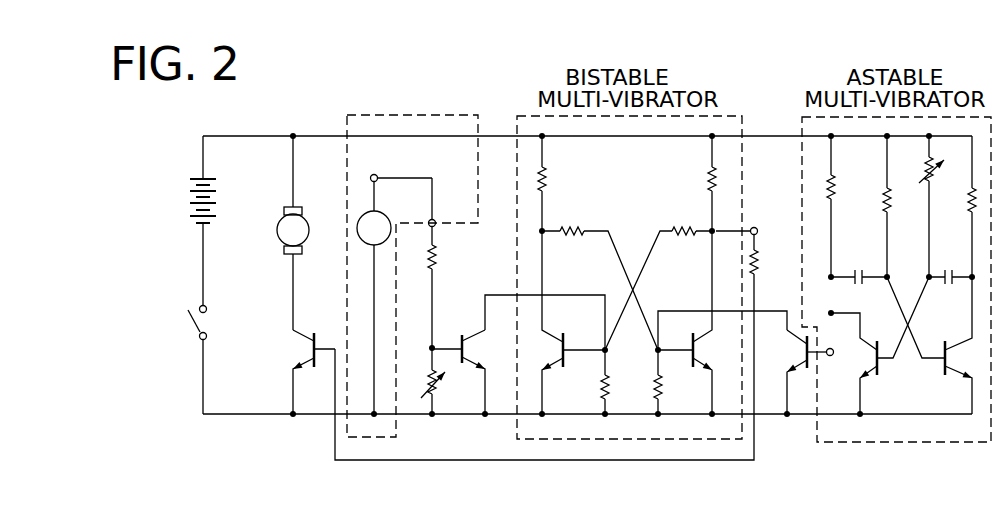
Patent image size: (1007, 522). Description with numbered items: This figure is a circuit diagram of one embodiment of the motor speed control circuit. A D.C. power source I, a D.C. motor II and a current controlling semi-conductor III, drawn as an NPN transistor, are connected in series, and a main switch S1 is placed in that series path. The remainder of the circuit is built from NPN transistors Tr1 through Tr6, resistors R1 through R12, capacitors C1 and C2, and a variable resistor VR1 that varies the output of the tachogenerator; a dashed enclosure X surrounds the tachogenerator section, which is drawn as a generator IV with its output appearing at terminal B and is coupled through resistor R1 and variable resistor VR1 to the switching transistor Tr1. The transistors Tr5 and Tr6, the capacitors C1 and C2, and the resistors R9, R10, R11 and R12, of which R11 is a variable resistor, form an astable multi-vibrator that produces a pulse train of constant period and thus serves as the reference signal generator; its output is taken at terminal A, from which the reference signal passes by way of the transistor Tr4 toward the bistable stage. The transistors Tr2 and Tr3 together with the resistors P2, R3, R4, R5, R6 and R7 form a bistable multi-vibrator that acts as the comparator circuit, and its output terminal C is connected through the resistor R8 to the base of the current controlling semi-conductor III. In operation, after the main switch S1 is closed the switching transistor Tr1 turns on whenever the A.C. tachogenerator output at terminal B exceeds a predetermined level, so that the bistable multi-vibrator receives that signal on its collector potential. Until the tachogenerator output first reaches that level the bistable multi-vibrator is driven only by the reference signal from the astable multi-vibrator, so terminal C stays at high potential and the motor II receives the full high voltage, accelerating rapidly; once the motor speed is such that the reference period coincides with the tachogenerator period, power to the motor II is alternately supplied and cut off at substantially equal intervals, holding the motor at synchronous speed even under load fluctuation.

The D.C. power source I is at (196, 193).
The D.C. motor II is at (281, 220).
The current controlling semi-conductor III is at (303, 346).
The generator IV is at (388, 213).
The main switch S1 is at (182, 323).
The control unit X is at (412, 120).
The terminal B is at (373, 174).
The output terminal C is at (455, 208).
The terminal A is at (621, 359).
The resistor R1 is at (449, 287).
The variable resistor VR1 is at (417, 381).
The switching transistor Tr1 is at (470, 348).
The resistor P2 is at (559, 183).
The resistor R3 is at (694, 183).
The resistor R4 is at (600, 288).
The resistor R5 is at (658, 288).
The transistor Tr2 is at (573, 322).
The transistor Tr3 is at (708, 355).
The resistor R6 is at (621, 382).
The resistor R7 is at (675, 382).
The resistor R8 is at (771, 266).
The transistor Tr4 is at (797, 343).
The resistor R9 is at (848, 206).
The resistor R10 is at (869, 206).
The variable resistor R11 is at (920, 206).
The resistor R12 is at (957, 206).
The capacitor C1 is at (859, 264).
The capacitor C2 is at (950, 264).
The transistor Tr5 is at (880, 345).
The transistor Tr6 is at (929, 345).